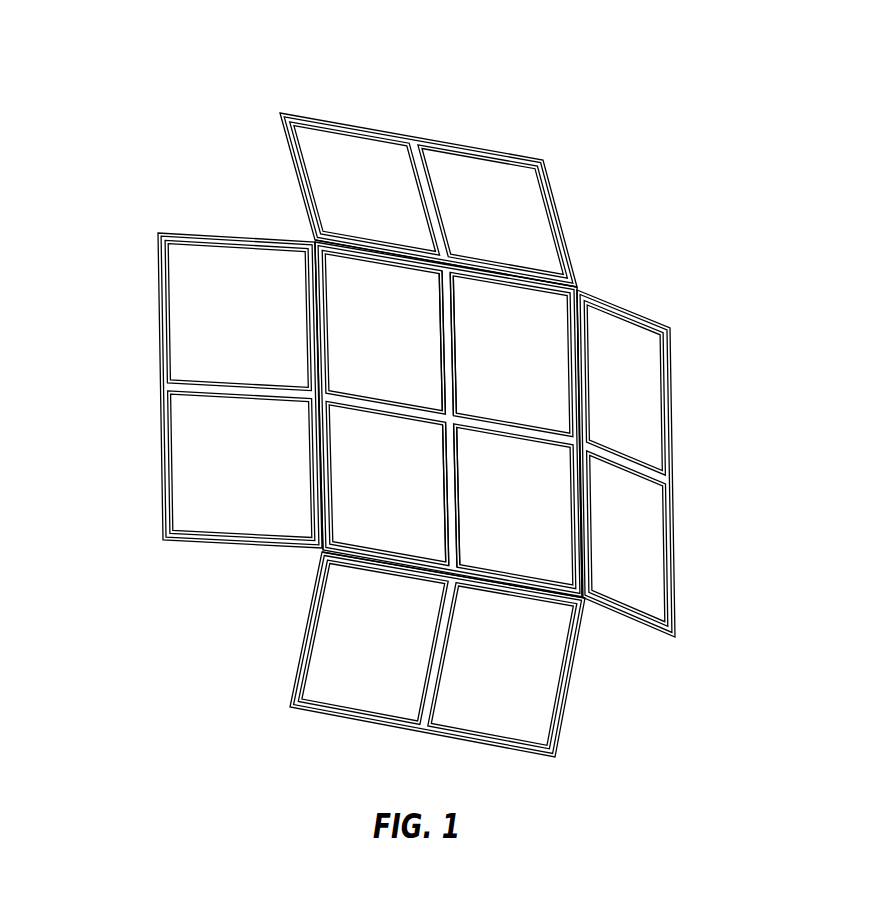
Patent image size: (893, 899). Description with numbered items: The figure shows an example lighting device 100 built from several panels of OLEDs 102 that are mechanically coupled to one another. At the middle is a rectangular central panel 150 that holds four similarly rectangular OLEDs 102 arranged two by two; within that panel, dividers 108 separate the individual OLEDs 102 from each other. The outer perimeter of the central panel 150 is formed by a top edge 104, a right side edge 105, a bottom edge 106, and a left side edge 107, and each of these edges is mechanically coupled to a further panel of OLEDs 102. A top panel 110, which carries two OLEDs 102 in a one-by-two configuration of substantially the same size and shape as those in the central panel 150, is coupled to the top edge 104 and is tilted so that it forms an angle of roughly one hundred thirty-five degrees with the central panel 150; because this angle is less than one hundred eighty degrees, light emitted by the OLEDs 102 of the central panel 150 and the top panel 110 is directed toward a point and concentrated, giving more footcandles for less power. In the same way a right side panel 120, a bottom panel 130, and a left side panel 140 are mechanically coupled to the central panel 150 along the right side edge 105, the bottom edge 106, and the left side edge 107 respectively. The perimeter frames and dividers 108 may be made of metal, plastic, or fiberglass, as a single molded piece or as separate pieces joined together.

The lighting device 100 is at (148, 65).
The OLEDs 102 is at (482, 422).
The top edge 104 is at (480, 265).
The right side edge 105 is at (588, 525).
The bottom edge 106 is at (388, 572).
The left side edge 107 is at (310, 470).
The dividers 108 is at (453, 340).
The top panel 110 is at (417, 135).
The right side panel 120 is at (677, 482).
The bottom panel 130 is at (418, 737).
The left side panel 140 is at (160, 383).
The central panel 150 is at (530, 322).